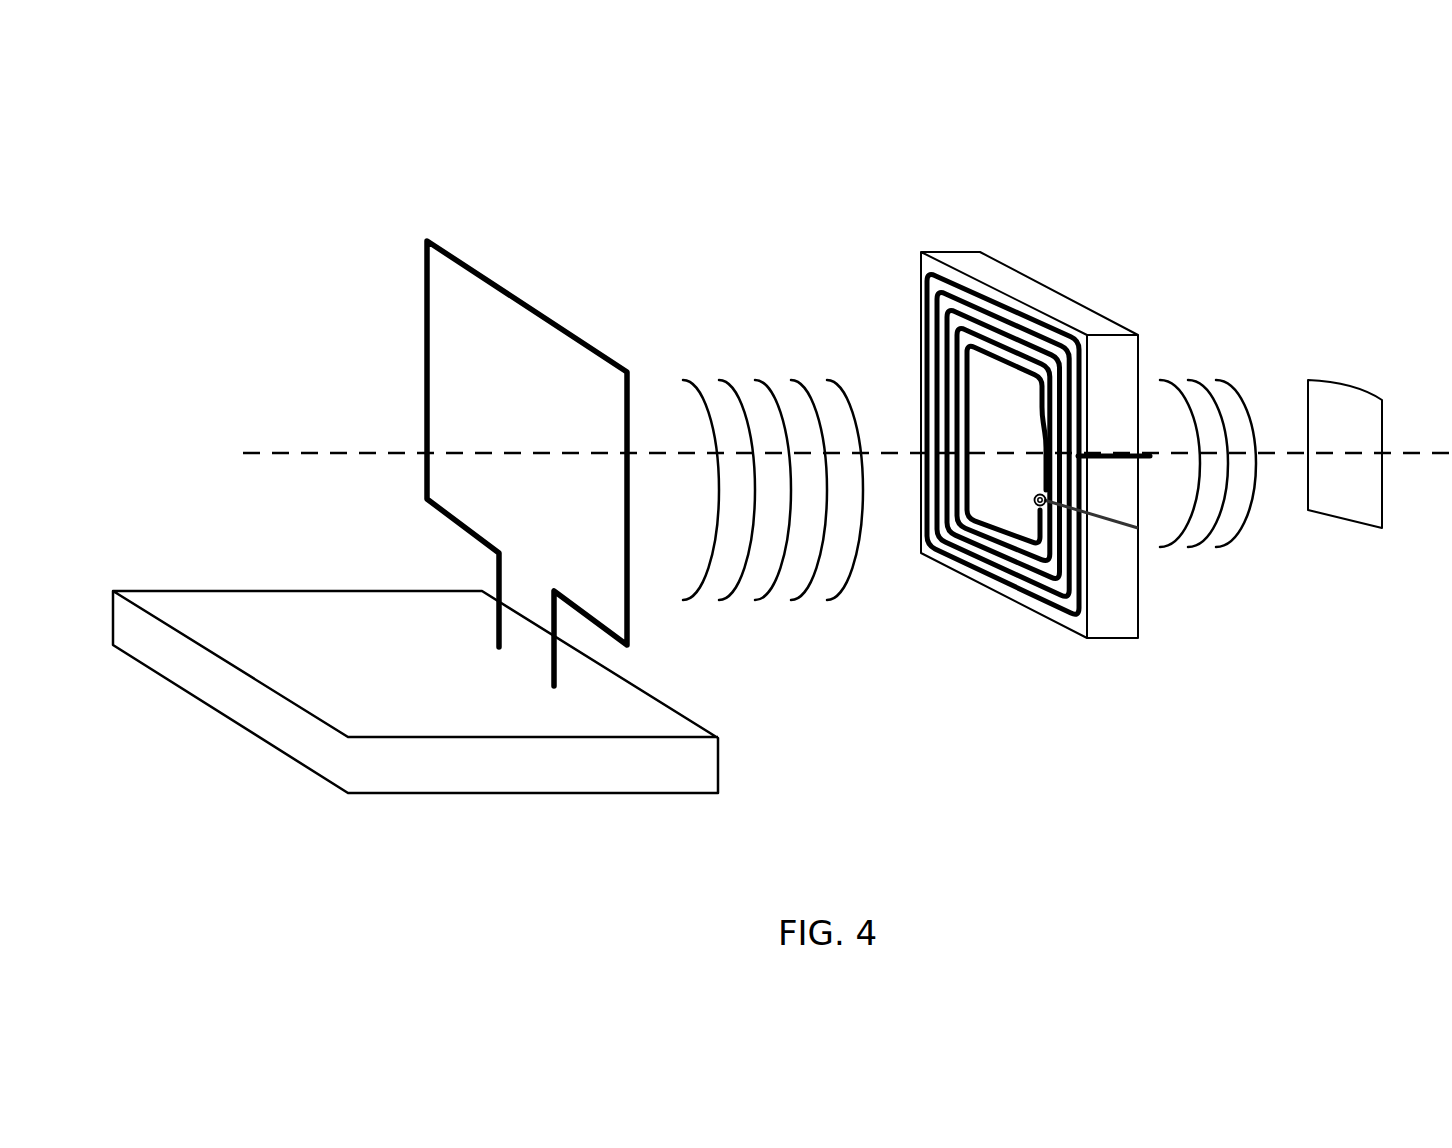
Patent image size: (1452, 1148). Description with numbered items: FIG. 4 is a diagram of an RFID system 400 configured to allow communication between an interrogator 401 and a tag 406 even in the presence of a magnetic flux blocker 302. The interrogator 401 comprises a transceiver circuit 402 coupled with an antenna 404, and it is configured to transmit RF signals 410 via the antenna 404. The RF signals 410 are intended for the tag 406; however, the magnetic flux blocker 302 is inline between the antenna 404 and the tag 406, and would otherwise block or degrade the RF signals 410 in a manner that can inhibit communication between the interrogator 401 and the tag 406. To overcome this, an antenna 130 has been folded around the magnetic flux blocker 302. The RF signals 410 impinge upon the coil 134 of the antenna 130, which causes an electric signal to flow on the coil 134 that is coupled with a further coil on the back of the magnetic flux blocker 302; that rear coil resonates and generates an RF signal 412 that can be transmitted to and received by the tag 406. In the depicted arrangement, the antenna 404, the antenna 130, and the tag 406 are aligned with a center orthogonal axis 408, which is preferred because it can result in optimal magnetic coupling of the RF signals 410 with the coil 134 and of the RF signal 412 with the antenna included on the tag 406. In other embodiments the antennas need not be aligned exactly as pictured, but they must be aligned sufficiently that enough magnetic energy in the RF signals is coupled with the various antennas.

The RFID system 400 is at (782, 424).
The interrogator 401 is at (438, 517).
The transceiver circuit 402 is at (673, 707).
The antenna 404 is at (632, 632).
The center orthogonal axis 408 is at (372, 450).
The RF signals 410 is at (777, 400).
The RF signal 412 is at (1182, 390).
The magnetic flux blocker 302 is at (1018, 491).
The antenna 130 is at (918, 325).
The coil 134 is at (977, 532).
The tag 406 is at (1345, 492).